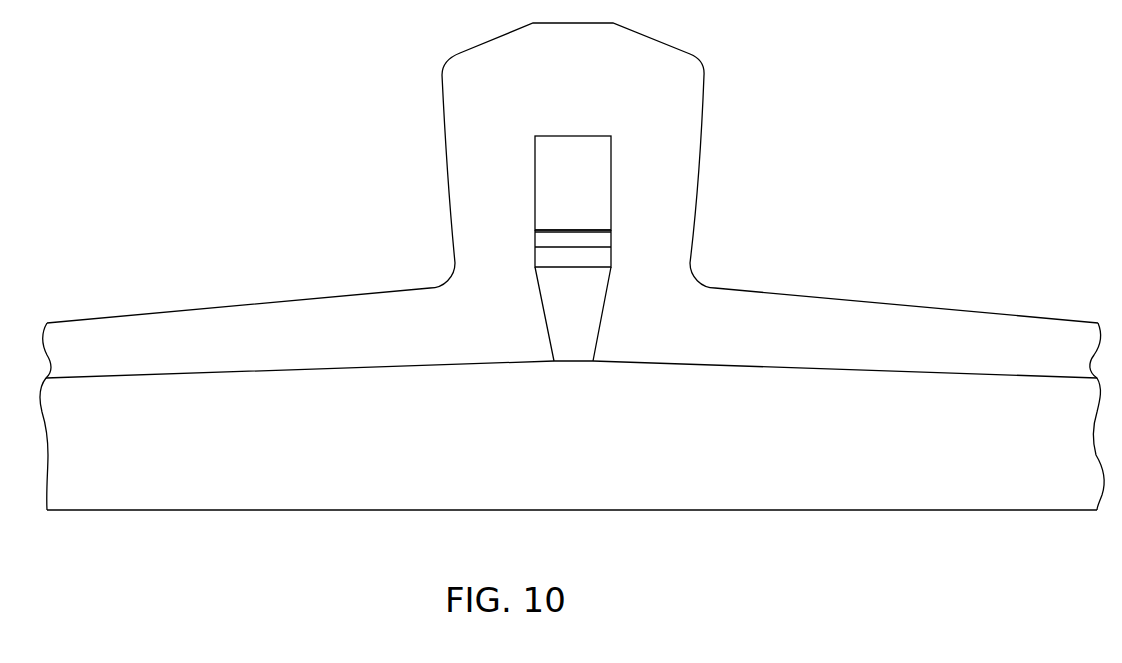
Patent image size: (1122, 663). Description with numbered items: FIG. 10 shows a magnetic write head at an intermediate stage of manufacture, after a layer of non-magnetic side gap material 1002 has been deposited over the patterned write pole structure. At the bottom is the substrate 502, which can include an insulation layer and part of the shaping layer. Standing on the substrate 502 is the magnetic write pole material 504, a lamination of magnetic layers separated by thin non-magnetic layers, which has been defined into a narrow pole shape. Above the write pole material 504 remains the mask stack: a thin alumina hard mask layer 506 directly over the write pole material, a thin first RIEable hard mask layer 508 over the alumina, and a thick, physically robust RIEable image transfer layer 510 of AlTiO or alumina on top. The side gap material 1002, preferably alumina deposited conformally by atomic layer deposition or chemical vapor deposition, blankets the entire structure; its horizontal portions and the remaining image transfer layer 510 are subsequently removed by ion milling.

The non-magnetic side gap material 1002 is at (665, 172).
The substrate 502 is at (580, 426).
The magnetic write pole material 504 is at (577, 320).
The alumina hard mask layer 506 is at (563, 256).
The first RIEable hard mask layer 508 is at (563, 238).
The RIEable image transfer layer 510 is at (553, 155).